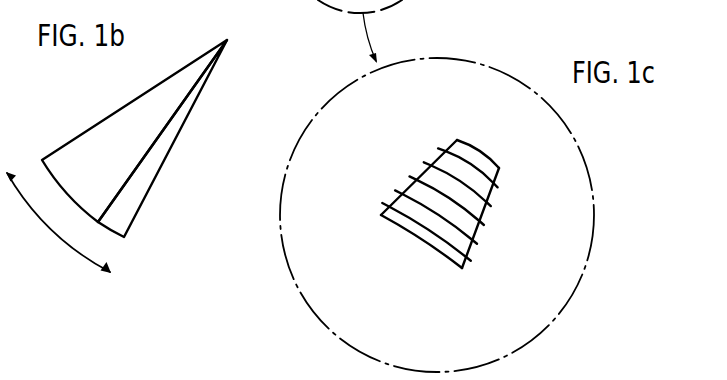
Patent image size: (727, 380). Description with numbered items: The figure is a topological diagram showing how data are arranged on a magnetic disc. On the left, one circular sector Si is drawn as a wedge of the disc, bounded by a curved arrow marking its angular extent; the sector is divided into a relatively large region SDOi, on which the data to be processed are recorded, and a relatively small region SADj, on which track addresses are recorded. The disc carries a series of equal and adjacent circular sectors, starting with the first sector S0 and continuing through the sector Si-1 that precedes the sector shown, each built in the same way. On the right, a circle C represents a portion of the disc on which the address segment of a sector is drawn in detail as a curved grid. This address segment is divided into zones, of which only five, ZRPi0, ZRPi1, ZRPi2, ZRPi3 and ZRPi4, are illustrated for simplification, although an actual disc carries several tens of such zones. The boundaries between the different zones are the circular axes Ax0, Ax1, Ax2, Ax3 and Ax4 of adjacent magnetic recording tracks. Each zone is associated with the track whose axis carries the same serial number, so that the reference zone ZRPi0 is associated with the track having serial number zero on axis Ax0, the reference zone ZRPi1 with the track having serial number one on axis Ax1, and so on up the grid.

In FIG. 1b, the data region of sector SDOi is at (97, 123).
In FIG. 1b, the address region of sector SADj is at (181, 129).
In FIG. 1b, the circular sector Si is at (58, 222).
In FIG. 1c, the preceding circular sector Si-1 is at (429, 17).
In FIG. 1c, the first circular sector S0 is at (485, 8).
In FIG. 1c, the cylinder / disc track circle C is at (594, 218).
In FIG. 1c, the address zone ZRPi4 is at (438, 148).
In FIG. 1c, the address zone ZRPi3 is at (424, 162).
In FIG. 1c, the address zone ZRPi2 is at (410, 176).
In FIG. 1c, the reference zone ZRPi1 is at (395, 190).
In FIG. 1c, the reference zone ZRPi0 is at (382, 203).
In FIG. 1c, the circular track axis Ax4 is at (498, 187).
In FIG. 1c, the circular track axis Ax3 is at (491, 206).
In FIG. 1c, the circular track axis Ax2 is at (484, 225).
In FIG. 1c, the circular track axis Ax1 is at (477, 244).
In FIG. 1c, the circular track axis Ax0 is at (471, 261).